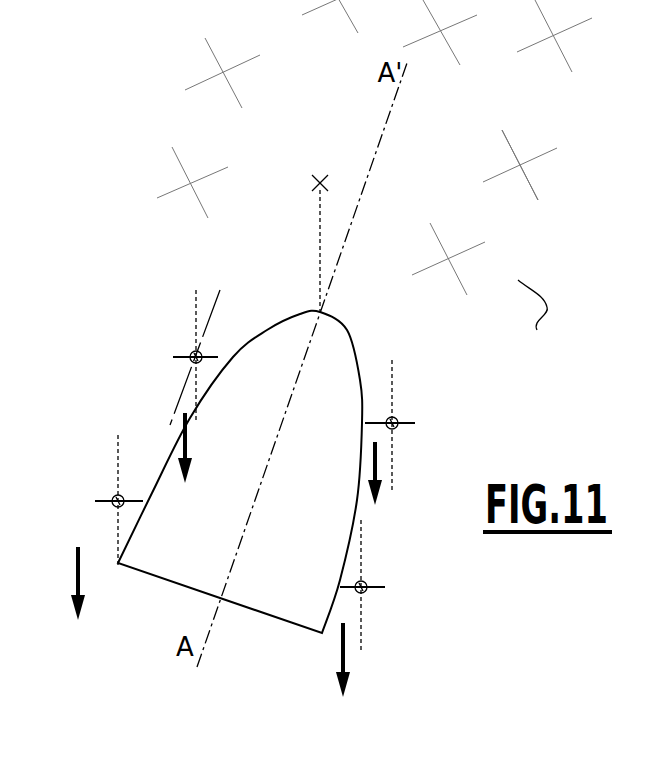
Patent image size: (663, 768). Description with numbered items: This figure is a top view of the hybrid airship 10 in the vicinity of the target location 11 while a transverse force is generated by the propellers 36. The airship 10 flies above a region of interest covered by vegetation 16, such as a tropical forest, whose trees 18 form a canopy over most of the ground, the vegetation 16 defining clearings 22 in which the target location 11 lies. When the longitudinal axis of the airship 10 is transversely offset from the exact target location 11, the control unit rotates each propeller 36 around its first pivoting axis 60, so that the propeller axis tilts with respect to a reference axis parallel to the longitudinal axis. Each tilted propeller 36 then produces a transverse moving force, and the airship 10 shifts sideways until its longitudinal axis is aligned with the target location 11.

The hybrid airship 10 is at (269, 660).
The target location 11 is at (318, 183).
The vegetation 16 is at (534, 321).
The trees 18 is at (518, 165).
The clearings 22 is at (308, 209).
The propeller 36 is at (190, 360).
The first pivoting axis 60 is at (190, 353).